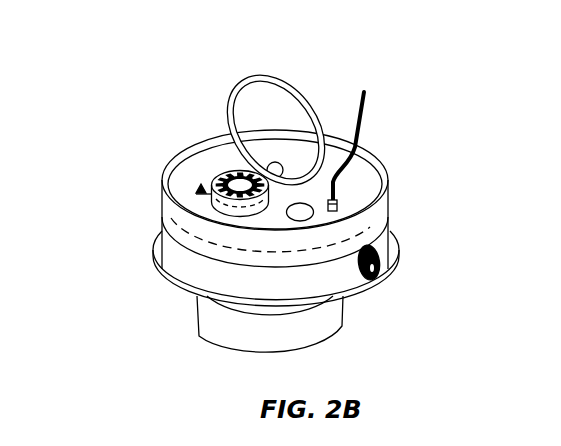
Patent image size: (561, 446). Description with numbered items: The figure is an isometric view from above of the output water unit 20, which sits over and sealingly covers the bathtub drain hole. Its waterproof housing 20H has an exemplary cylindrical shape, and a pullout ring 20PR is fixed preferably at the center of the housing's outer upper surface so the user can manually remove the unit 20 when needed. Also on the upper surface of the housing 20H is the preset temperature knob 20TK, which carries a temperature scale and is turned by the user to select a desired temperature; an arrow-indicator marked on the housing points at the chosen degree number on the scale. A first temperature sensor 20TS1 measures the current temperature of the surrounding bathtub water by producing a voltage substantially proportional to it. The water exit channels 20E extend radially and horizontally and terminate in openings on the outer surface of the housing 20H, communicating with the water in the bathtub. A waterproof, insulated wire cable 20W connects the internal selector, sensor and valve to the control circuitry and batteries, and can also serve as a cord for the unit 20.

The output water unit 20 is at (412, 100).
The waterproof housing 20H is at (155, 243).
The water exit channels 20E is at (380, 274).
The preset temperature knob 20TK is at (208, 190).
The first temperature sensor 20TS1 is at (302, 214).
The wire cable 20W is at (366, 122).
The pullout ring 20PR is at (285, 82).